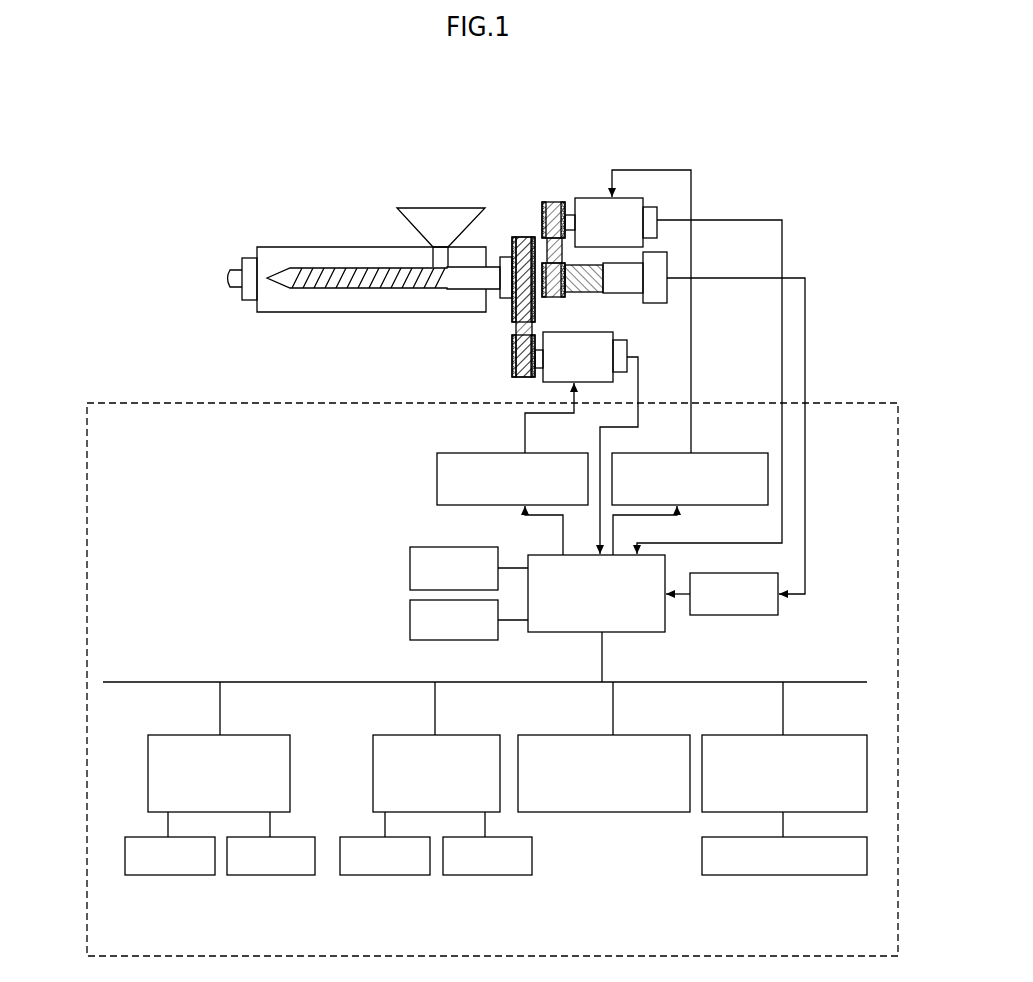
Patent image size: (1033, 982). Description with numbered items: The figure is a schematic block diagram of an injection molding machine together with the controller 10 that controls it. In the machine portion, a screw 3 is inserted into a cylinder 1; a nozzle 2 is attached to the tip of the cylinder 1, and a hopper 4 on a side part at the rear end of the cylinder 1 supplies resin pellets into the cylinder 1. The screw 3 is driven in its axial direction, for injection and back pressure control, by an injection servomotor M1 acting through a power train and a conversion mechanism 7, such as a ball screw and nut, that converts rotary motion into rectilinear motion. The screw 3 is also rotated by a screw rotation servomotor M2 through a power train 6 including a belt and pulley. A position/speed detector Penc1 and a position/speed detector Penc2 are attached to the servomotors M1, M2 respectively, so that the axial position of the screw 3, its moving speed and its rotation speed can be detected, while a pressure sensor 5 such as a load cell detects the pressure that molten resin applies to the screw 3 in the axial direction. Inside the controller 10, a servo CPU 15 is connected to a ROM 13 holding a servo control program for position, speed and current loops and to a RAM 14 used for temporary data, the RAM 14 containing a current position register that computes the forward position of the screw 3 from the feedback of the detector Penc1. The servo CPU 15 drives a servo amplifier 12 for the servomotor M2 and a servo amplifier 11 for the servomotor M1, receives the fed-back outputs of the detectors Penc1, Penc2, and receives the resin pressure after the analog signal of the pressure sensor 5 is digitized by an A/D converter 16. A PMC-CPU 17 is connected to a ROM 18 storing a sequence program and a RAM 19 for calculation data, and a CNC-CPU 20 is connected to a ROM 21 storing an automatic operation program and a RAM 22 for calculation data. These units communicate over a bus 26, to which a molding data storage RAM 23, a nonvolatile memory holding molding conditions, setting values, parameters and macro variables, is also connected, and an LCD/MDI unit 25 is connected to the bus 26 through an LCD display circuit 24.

The cylinder 1 is at (295, 247).
The nozzle 2 is at (238, 281).
The screw 3 is at (333, 290).
The hopper 4 is at (430, 216).
The pressure sensor 5 is at (651, 305).
The power train 6 is at (500, 339).
The conversion mechanism 7 is at (553, 198).
The injection servomotor M1 is at (598, 197).
The screw rotation servomotor M2 is at (557, 333).
The position/speed detector Penc1 is at (653, 205).
The position/speed detector Penc2 is at (630, 349).
The controller 10 is at (825, 402).
The servo amplifier 11 is at (700, 452).
The servo amplifier 12 is at (483, 452).
The ROM 13 is at (410, 560).
The RAM 14 is at (410, 613).
The servo CPU 15 is at (627, 633).
The A/D converter 16 is at (728, 616).
The PMC-CPU 17 is at (197, 733).
The ROM 18 is at (163, 876).
The RAM 19 is at (249, 886).
The CNC-CPU 20 is at (417, 733).
The ROM 21 is at (392, 876).
The RAM 22 is at (453, 886).
The molding data storage RAM 23 is at (597, 733).
The LCD display circuit 24 is at (758, 733).
The LCD/MDI unit 25 is at (782, 876).
The bus 26 is at (793, 677).